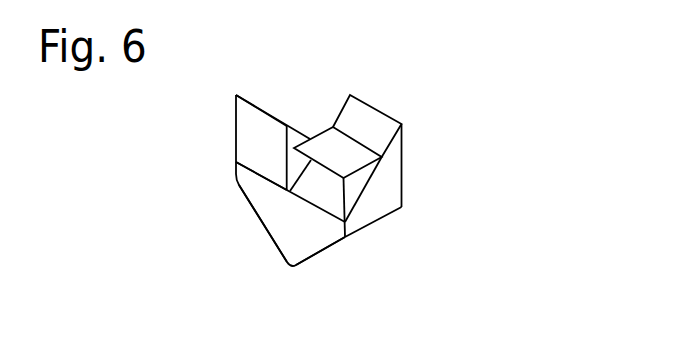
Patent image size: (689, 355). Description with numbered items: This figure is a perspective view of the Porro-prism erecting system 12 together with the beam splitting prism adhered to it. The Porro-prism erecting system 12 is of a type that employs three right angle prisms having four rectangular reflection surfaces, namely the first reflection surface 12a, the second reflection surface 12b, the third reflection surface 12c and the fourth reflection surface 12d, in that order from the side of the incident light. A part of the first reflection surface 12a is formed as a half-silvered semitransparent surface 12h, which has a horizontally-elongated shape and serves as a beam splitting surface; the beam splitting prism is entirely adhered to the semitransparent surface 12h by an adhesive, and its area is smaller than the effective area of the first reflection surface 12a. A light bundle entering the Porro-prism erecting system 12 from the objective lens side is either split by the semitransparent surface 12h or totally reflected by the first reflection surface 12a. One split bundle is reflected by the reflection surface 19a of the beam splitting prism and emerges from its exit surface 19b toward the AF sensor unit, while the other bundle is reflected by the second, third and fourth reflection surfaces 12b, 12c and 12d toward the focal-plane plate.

The Porro-prism erecting system 12 is at (393, 67).
The first reflection surface 12a is at (380, 118).
The second reflection surface 12b is at (310, 258).
The third reflection surface 12c is at (263, 222).
The fourth reflection surface 12d is at (254, 104).
The semitransparent surface 12h is at (365, 173).
The reflection surface of the beam splitting prism 19a is at (340, 178).
The exit surface of the beam splitting prism 19b is at (330, 146).